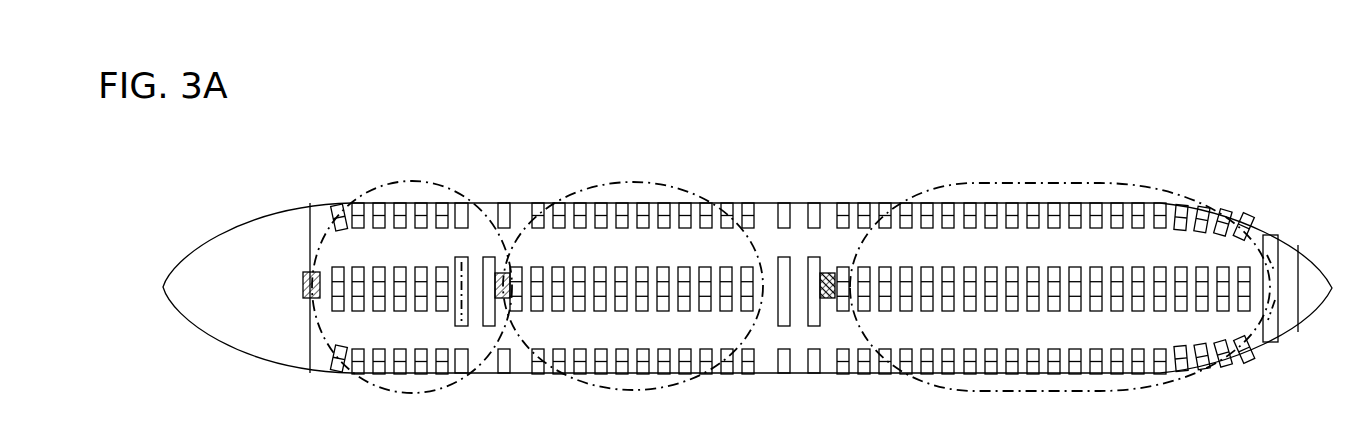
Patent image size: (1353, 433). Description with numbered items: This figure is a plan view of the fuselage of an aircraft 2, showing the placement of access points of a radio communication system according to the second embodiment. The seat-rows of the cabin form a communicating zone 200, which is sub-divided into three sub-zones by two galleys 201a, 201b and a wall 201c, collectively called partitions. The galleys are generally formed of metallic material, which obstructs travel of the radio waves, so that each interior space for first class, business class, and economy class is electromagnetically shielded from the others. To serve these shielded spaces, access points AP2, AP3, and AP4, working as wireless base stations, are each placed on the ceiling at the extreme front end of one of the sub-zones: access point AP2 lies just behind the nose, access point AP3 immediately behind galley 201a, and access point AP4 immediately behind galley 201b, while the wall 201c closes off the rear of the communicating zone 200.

The aircraft 2 is at (244, 227).
The communicating zone 200 is at (488, 225).
The galley 201a is at (481, 266).
The galley 201b is at (807, 278).
The wall 201c is at (1280, 265).
The access point AP2 is at (307, 273).
The access point AP3 is at (503, 273).
The access point AP4 is at (830, 273).